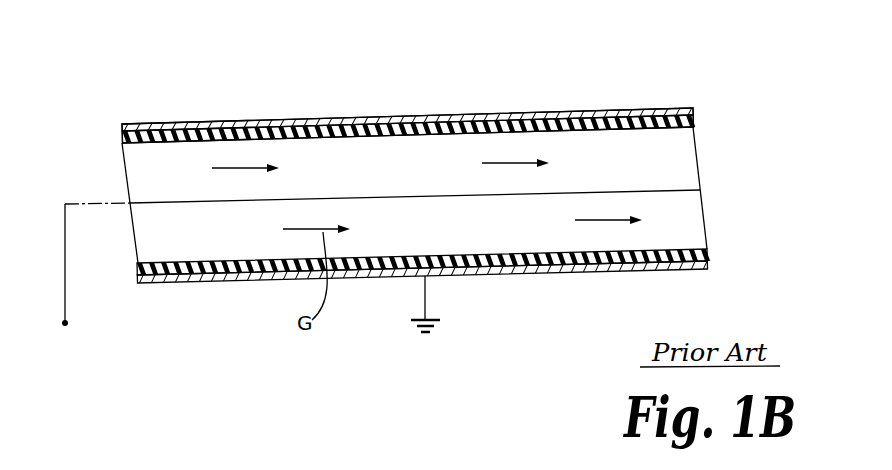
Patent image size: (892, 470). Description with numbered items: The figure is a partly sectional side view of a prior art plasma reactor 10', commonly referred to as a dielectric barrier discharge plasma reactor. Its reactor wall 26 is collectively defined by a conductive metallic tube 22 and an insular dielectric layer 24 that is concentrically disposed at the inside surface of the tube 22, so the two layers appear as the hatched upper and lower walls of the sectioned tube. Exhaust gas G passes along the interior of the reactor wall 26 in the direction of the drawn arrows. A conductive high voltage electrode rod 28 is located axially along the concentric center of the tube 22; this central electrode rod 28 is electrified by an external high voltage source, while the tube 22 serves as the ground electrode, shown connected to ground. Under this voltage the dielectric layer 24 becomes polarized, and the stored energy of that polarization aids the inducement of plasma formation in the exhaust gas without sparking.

The plasma reactor 10' is at (414, 160).
The conductive metallic tube 22 is at (465, 117).
The insular dielectric layer 24 is at (225, 128).
The reactor wall 26 is at (345, 102).
The conductive high voltage electrode rod 28 is at (180, 150).